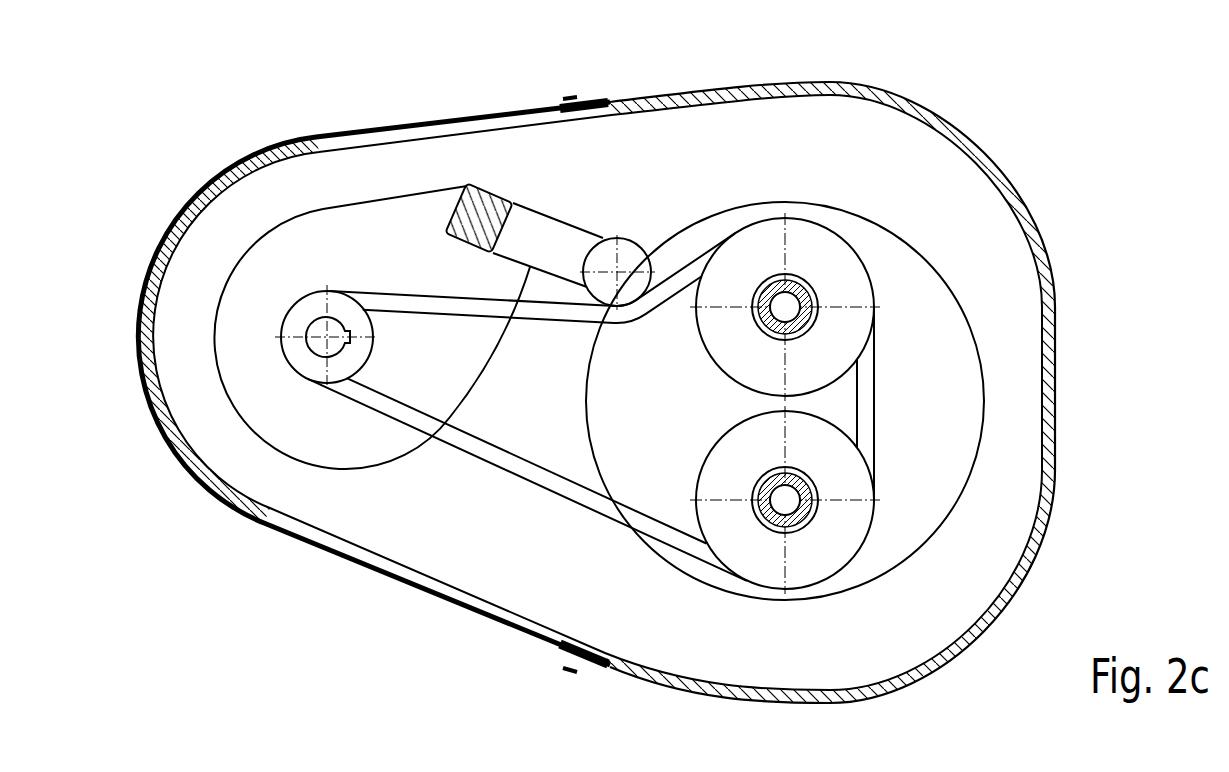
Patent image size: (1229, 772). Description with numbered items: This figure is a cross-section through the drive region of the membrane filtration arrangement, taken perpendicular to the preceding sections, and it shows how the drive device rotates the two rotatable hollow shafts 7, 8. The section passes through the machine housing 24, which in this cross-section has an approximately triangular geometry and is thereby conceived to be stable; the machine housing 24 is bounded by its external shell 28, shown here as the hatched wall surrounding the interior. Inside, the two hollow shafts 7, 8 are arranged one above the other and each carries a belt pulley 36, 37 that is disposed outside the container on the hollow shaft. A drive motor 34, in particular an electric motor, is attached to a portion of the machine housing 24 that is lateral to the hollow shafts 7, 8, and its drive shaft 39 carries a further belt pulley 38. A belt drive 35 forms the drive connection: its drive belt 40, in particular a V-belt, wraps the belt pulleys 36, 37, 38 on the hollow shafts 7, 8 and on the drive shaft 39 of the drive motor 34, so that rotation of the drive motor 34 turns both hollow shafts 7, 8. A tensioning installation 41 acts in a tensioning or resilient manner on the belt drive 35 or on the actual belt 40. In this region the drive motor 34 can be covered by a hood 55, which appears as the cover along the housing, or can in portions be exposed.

The hollow shaft 7 is at (773, 530).
The hollow shaft 8 is at (790, 292).
The machine housing 24 is at (1052, 288).
The external shell 28 is at (1043, 370).
The drive motor 34 is at (337, 222).
The belt drive 35 is at (680, 268).
The belt pulley 36 is at (815, 555).
The belt pulley 37 is at (838, 280).
The belt pulley 38 is at (297, 348).
The drive shaft 39 is at (338, 320).
The drive belt 40 is at (485, 447).
The tensioning installation 41 is at (624, 232).
The hood 55 is at (312, 547).